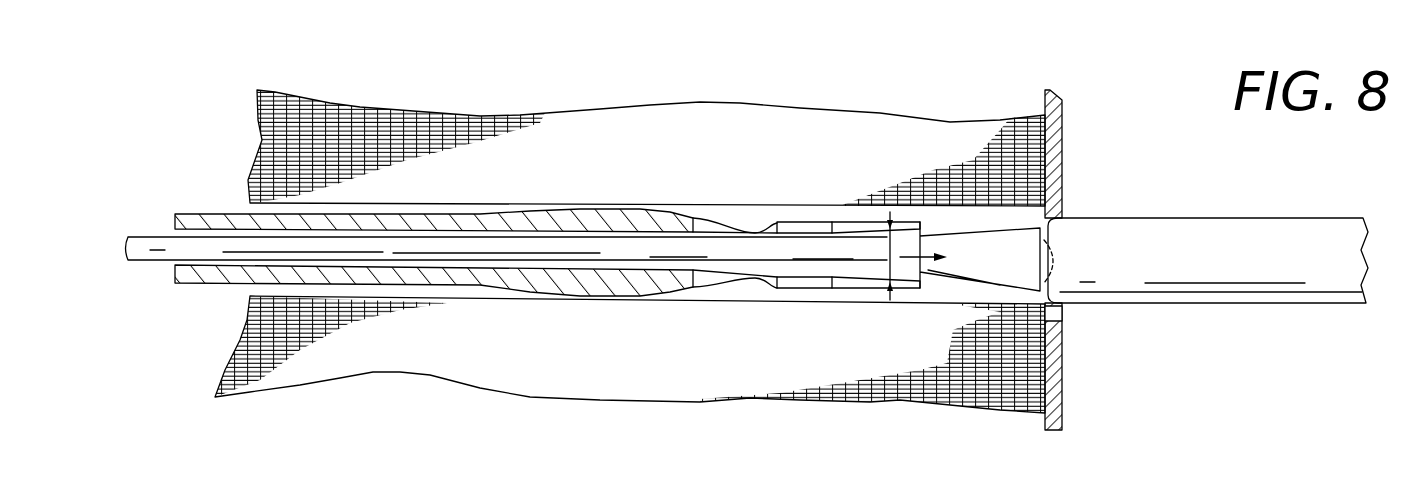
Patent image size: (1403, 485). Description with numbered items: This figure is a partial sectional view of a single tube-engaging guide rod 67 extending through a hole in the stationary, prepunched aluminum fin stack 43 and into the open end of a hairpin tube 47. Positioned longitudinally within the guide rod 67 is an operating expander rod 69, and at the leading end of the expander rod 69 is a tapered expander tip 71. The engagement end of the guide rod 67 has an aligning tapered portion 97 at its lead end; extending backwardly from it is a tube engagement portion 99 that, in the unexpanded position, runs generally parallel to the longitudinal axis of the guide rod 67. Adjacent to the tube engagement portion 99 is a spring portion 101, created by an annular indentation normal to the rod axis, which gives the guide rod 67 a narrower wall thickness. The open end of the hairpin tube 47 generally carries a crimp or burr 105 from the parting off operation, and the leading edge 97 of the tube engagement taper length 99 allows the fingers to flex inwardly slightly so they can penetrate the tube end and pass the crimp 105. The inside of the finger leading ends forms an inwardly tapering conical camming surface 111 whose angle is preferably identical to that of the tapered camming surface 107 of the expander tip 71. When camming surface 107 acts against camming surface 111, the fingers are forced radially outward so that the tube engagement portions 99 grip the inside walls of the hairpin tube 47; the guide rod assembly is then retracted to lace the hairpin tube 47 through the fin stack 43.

The fin stack 43 is at (403, 108).
The hairpin tube 47 is at (1292, 271).
The guide rod 67 is at (213, 220).
The expander rod 69 is at (137, 237).
The expander tip 71 is at (1020, 271).
The aligning tapered portion 97 is at (900, 290).
The tube engagement portion 99 is at (837, 290).
The spring portion 101 is at (745, 290).
The crimp or burr 105 is at (1064, 318).
The tapered camming surface 107 is at (983, 232).
The camming surface 111 is at (903, 230).